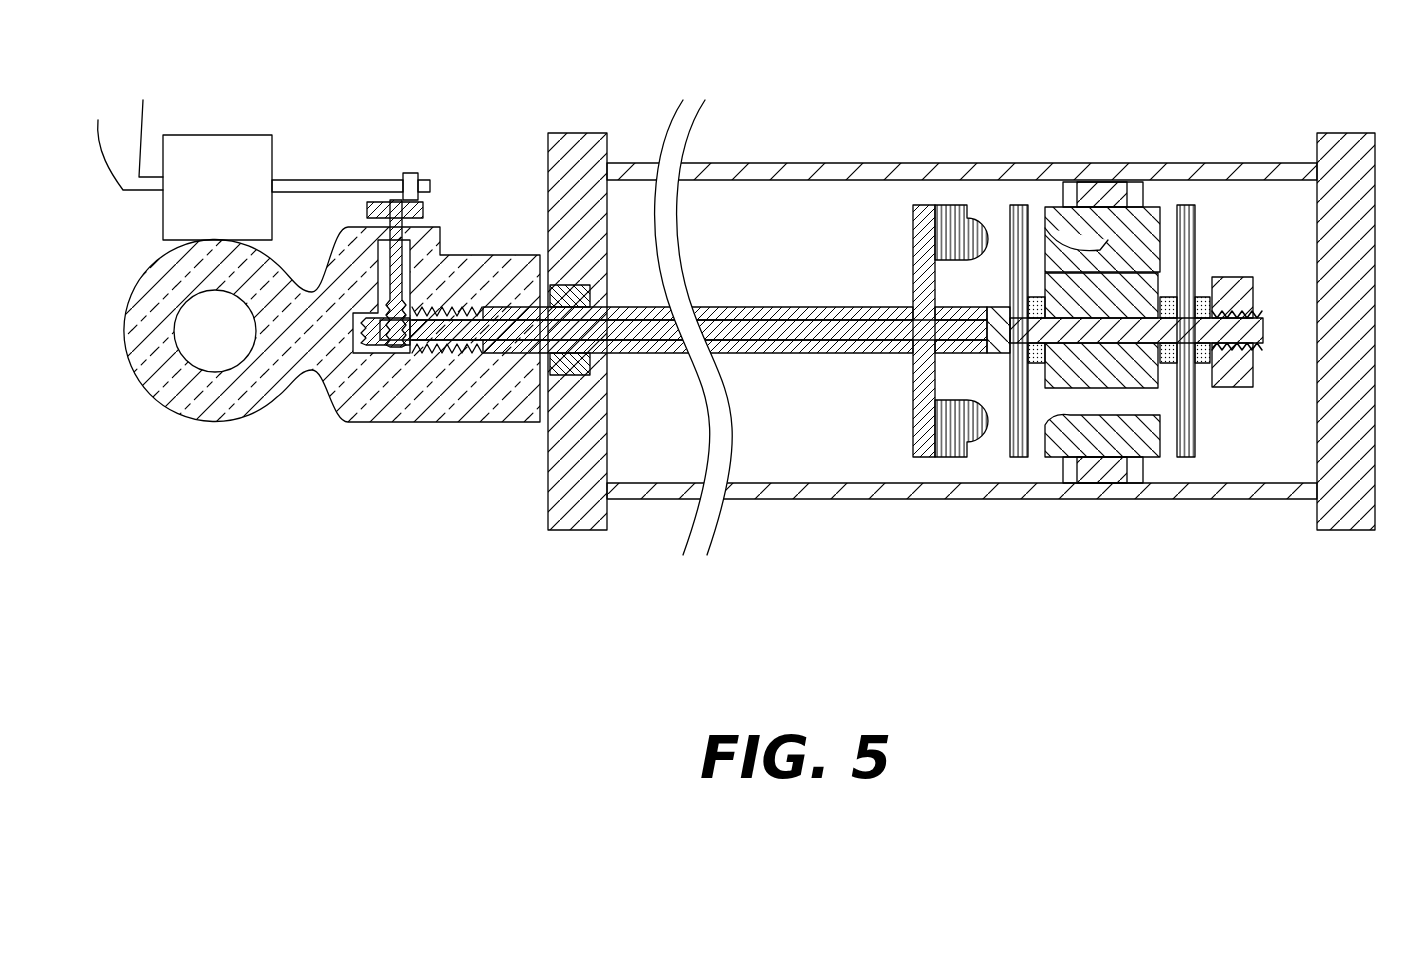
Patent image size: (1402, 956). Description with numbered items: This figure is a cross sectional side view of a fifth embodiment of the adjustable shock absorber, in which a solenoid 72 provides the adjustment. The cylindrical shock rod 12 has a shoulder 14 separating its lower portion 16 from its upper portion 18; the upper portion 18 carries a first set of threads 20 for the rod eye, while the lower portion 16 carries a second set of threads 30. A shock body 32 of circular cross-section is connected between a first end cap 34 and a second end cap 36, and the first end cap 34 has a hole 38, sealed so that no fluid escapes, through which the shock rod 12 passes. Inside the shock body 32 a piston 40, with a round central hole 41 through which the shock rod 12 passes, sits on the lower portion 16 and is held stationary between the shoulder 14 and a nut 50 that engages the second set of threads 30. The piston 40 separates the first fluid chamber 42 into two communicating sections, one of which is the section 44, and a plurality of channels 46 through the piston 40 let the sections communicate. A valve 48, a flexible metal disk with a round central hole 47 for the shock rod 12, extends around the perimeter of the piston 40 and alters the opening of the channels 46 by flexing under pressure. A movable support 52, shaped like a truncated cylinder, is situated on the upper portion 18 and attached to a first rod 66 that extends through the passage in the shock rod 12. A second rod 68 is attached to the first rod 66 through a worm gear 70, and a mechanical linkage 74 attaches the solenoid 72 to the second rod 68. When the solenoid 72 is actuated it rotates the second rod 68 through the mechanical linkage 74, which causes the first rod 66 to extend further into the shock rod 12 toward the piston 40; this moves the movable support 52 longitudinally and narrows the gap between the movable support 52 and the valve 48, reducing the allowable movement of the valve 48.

The shock rod 12 is at (733, 313).
The shoulder 14 is at (1003, 346).
The lower portion 16 is at (1256, 340).
The upper portion 18 is at (948, 346).
The first set of threads 20 is at (433, 300).
The second set of threads 30 is at (1240, 308).
The shock body 32 is at (808, 174).
The first end cap 34 is at (578, 148).
The second end cap 36 is at (1355, 153).
The hole 38 is at (598, 300).
The piston 40 is at (1147, 206).
The round central hole 41 is at (1143, 250).
The first fluid chamber 42 is at (820, 224).
The communicating section 44 is at (643, 468).
The channels 46 is at (1083, 196).
The round central hole 47 is at (1026, 352).
The valve 48 is at (1013, 209).
The nut 50 is at (1225, 277).
The movable support 52 is at (924, 206).
The first rod 66 is at (630, 321).
The second rod 68 is at (395, 253).
The worm gear 70 is at (373, 352).
The solenoid 72 is at (219, 148).
The mechanical linkage 74 is at (323, 181).